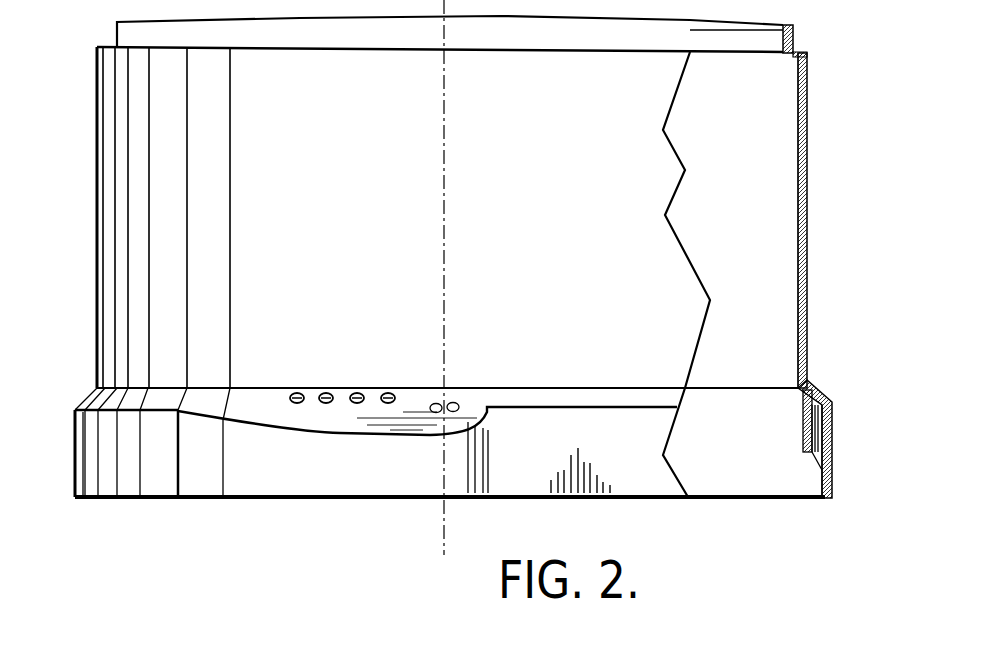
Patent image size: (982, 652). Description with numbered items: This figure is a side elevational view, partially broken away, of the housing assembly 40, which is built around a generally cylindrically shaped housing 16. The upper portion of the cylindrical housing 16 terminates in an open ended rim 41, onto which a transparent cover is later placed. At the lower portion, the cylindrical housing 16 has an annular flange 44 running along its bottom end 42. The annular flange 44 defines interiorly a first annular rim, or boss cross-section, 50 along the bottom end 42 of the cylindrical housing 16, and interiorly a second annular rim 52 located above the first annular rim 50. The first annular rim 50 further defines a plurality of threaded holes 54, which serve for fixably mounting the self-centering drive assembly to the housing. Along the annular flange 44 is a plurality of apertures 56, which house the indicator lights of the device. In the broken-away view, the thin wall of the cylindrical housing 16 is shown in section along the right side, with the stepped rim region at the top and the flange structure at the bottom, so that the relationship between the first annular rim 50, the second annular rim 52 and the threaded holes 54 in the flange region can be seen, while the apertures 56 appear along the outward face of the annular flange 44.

The cylindrical housing 16 is at (808, 145).
The housing assembly 40 is at (815, 221).
The open ended rim 41 is at (797, 50).
The bottom end 42 is at (635, 500).
The annular flange 44 is at (120, 450).
The first annular rim 50 is at (834, 472).
The second annular rim 52 is at (803, 392).
The threaded holes 54 is at (820, 388).
The apertures 56 is at (382, 386).